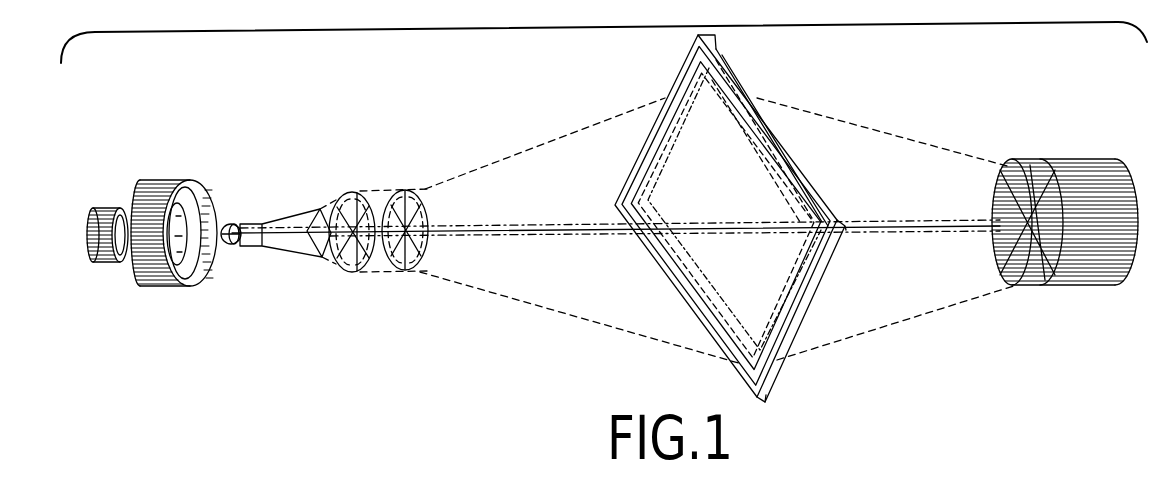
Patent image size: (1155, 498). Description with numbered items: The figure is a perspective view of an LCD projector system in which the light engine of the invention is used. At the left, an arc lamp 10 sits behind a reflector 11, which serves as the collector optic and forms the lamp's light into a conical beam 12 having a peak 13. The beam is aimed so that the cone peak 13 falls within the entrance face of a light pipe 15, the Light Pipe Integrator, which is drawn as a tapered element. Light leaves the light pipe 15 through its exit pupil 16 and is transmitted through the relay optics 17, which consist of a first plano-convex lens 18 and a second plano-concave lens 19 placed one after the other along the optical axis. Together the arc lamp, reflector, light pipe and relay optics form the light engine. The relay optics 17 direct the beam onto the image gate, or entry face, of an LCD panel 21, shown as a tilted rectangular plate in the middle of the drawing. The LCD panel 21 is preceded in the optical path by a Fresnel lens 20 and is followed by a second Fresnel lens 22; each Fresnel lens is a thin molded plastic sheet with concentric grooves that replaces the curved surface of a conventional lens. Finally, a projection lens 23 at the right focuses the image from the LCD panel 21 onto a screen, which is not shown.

The arc lamp 10 is at (113, 261).
The reflector 11 is at (189, 283).
The conical beam 12 is at (200, 212).
The cone peak 13 is at (240, 222).
The light pipe 15 is at (303, 254).
The exit pupil 16 is at (331, 262).
The relay optics 17 is at (400, 160).
The first plano-convex lens 18 is at (341, 196).
The second plano-concave lens 19 is at (418, 190).
The Fresnel lens 20 is at (693, 332).
The LCD panel 21 is at (718, 172).
The second Fresnel lens 22 is at (767, 333).
The projection lens 23 is at (1058, 285).